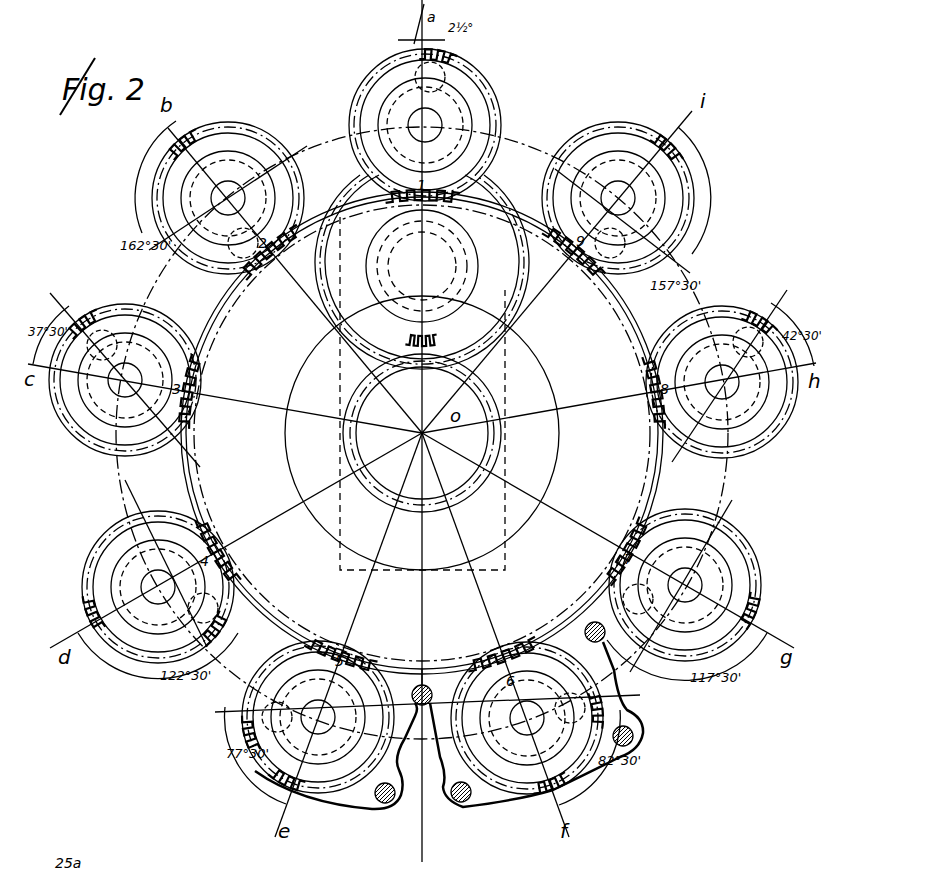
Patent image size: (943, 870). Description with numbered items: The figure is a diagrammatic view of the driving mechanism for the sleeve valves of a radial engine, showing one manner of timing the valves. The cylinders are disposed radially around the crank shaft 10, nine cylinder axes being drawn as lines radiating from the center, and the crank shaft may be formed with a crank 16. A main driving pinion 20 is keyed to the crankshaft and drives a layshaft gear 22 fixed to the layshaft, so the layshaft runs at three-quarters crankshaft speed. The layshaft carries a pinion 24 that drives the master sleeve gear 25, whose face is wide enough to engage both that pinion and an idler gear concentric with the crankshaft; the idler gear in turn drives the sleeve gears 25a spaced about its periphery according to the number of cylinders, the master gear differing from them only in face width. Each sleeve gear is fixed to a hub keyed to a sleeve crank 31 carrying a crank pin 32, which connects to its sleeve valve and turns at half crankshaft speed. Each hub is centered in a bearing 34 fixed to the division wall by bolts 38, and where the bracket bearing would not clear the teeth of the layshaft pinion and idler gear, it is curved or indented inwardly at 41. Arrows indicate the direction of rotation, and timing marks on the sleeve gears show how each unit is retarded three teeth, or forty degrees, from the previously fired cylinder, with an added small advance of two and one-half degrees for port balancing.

The crank shaft 10 is at (528, 372).
The crank 16 is at (465, 252).
The main driving pinion 20 is at (492, 447).
The layshaft gear 22 is at (490, 300).
The pinion 24 is at (345, 272).
The master sleeve gear 25 is at (358, 78).
The sleeve gear 25a is at (652, 128).
The sleeve crank 31 is at (440, 118).
The crank pin 32 is at (470, 72).
The bearing 34 is at (330, 818).
The bolts 38 is at (422, 706).
The indentation 41 is at (512, 724).